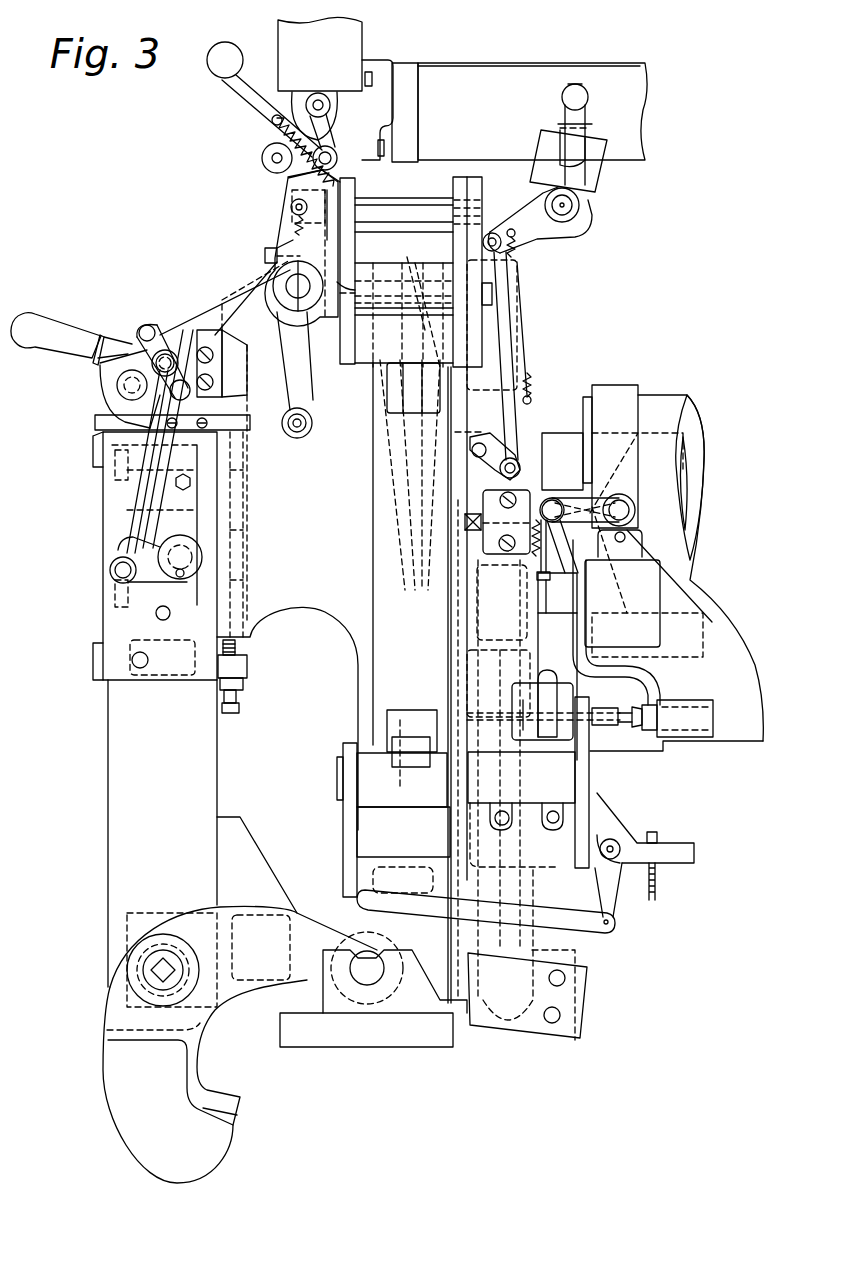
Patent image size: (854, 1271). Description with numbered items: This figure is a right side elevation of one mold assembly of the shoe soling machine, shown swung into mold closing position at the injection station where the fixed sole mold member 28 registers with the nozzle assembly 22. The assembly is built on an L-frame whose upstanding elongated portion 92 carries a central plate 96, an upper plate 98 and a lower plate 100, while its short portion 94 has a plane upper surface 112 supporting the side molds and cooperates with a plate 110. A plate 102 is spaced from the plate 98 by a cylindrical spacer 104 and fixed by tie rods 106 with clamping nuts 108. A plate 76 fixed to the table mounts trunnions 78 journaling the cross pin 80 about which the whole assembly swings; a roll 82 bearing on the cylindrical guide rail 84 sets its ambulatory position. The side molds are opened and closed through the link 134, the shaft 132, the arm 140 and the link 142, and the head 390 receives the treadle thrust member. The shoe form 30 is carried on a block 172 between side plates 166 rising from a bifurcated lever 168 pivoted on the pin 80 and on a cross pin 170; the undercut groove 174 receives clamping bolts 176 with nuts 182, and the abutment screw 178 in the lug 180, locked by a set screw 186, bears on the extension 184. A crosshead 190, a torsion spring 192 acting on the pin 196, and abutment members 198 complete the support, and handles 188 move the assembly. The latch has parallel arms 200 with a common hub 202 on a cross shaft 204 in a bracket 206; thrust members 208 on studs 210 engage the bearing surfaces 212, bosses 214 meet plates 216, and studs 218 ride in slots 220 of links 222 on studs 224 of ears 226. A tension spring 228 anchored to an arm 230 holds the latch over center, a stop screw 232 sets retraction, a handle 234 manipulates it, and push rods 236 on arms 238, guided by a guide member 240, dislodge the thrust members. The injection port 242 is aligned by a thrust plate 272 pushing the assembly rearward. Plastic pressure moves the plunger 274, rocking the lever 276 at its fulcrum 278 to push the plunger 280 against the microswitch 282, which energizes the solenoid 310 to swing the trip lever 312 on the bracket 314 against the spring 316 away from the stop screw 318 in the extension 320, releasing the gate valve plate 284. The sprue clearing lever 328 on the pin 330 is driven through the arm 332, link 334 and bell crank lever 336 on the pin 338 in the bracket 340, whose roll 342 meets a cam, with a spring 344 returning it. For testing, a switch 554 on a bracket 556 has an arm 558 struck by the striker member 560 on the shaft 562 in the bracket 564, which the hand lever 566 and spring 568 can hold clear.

The nozzle assembly 22 is at (714, 556).
The sole mold member 28 is at (380, 487).
The shoe form 30 is at (305, 607).
The plate 76 is at (378, 1040).
The trunnions 78 is at (415, 995).
The cross pin 80 is at (363, 985).
The roll 82 is at (596, 174).
The cylindrical guide rail 84 is at (637, 140).
The elongated portion 92 is at (531, 398).
The short portion 94 is at (455, 1000).
The central plate 96 is at (457, 495).
The plate 98 is at (453, 183).
The plate 100 is at (462, 878).
The plate 102 is at (347, 243).
The cylindrical spacer 104 is at (440, 278).
The tie rods 106 is at (488, 297).
The clamping nuts 108 is at (368, 292).
The plate 110 is at (343, 812).
The plane upper surface 112 is at (372, 845).
The shaft 132 is at (341, 770).
The link 134 is at (405, 392).
The arm 140 is at (548, 778).
The link 142 is at (545, 672).
The side plates 166 is at (113, 766).
The bifurcated lever 168 is at (113, 1091).
The cross pin 170 is at (160, 967).
The block 172 is at (115, 525).
The longitudinal undercut groove 174 is at (243, 500).
The clamping bolts 176 is at (244, 472).
The abutment screw 178 is at (238, 712).
The lug 180 is at (248, 668).
The nuts 182 is at (112, 472).
The extension 184 is at (253, 628).
The set screw 186 is at (243, 686).
The handles 188 is at (202, 549).
The crosshead 190 is at (200, 1024).
The torsion spring 192 is at (212, 956).
The pin 196 is at (186, 910).
The abutment members 198 is at (228, 816).
The parallel arms 200 is at (230, 293).
The common hub 202 is at (280, 282).
The cross shaft 204 is at (293, 232).
The bracket 206 is at (291, 205).
The thrust members 208 is at (97, 368).
The stud 210 is at (117, 385).
The semicircular bearing surfaces 212 is at (197, 327).
The abutment members 214 is at (240, 393).
The plates 216 is at (228, 400).
The studs 218 is at (167, 350).
The slots 220 is at (168, 387).
The links 222 is at (180, 489).
The studs 224 is at (145, 322).
The ears 226 is at (140, 328).
The tension spring 228 is at (312, 426).
The arm 230 is at (310, 368).
The stop screw 232 is at (268, 248).
The handle 234 is at (32, 320).
The push rods 236 is at (142, 537).
The arm 238 is at (150, 548).
The guide member 240 is at (190, 430).
The injection port 242 is at (420, 538).
The thrust plate 272 is at (105, 496).
The plunger 274 is at (412, 780).
The lever 276 is at (480, 670).
The fulcrum 278 is at (445, 590).
The plunger 280 is at (523, 720).
The microswitch 282 is at (676, 700).
The gate valve plate 284 is at (472, 513).
The solenoid 310 is at (622, 532).
The trip lever 312 is at (615, 500).
The bracket 314 is at (605, 570).
The spring 316 is at (520, 548).
The stop screw 318 is at (547, 582).
The extension 320 is at (532, 563).
The sprue clearing lever 328 is at (455, 433).
The pin 330 is at (474, 450).
The arm 332 is at (498, 455).
The link 334 is at (510, 352).
The bell crank lever 336 is at (548, 228).
The pin 338 is at (565, 208).
The bracket 340 is at (582, 208).
The roll 342 is at (563, 95).
The spring 344 is at (522, 252).
The head 390 is at (582, 995).
The switch 554 is at (345, 47).
The bracket 556 is at (418, 95).
The arm 558 is at (338, 152).
The striker member 560 is at (313, 96).
The shaft 562 is at (267, 153).
The bracket 564 is at (285, 183).
The hand lever 566 is at (228, 88).
The spring 568 is at (268, 130).